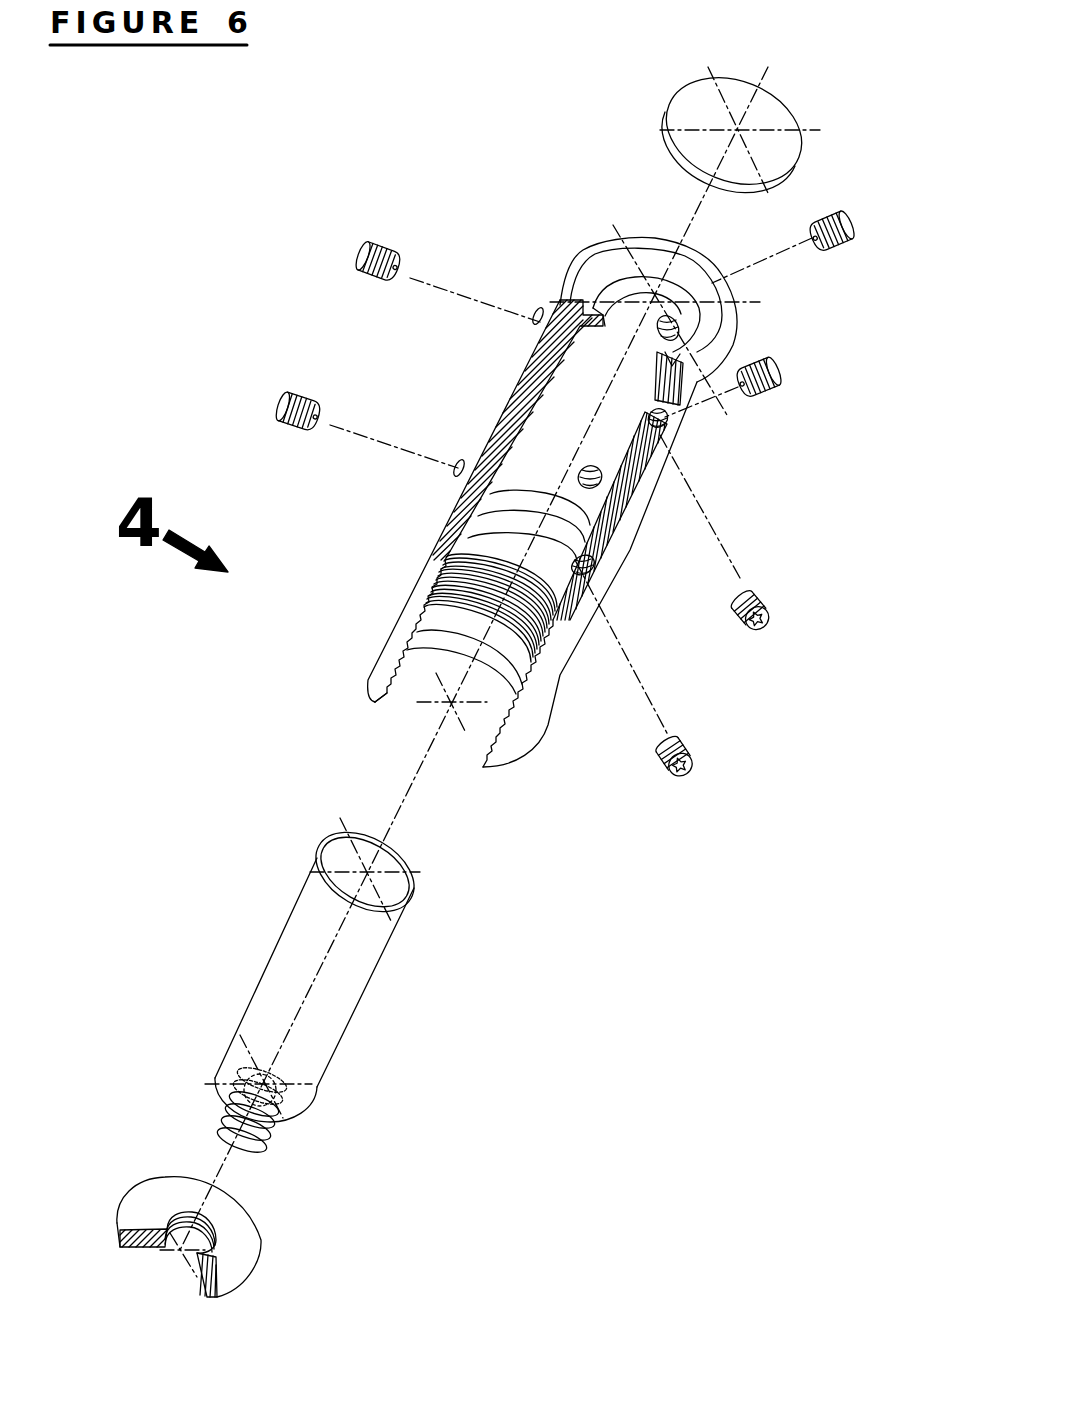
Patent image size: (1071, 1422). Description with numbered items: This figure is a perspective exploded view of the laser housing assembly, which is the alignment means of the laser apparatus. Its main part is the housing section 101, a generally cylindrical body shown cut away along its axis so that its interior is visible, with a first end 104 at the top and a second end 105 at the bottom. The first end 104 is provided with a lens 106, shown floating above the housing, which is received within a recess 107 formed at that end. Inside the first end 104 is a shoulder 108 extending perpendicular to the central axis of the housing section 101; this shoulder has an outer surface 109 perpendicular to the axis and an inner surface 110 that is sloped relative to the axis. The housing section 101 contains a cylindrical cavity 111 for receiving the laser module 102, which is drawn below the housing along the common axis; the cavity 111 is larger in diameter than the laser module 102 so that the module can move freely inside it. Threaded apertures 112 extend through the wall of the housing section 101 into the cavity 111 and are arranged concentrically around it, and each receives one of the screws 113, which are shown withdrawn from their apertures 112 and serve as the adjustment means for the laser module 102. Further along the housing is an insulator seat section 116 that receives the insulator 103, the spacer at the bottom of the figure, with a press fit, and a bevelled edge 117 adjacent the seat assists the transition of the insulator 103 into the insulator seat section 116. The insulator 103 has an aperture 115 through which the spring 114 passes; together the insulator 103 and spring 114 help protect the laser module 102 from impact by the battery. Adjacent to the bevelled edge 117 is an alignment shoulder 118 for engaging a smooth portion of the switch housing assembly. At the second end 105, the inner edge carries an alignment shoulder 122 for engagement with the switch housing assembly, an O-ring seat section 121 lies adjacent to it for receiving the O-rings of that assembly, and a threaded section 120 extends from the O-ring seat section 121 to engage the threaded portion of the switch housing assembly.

The housing section 101 is at (367, 642).
The laser module 102 is at (253, 970).
The insulator 103 is at (113, 1207).
The first end 104 is at (573, 237).
The second end 105 is at (517, 768).
The lens 106 is at (803, 115).
The recess 107 is at (707, 283).
The shoulder 108 is at (617, 315).
The outer surface 109 is at (593, 308).
The inner surface 110 is at (600, 485).
The cylindrical cavity 111 is at (514, 464).
The threaded apertures 112 is at (532, 310).
The screws 113 is at (353, 242).
The spring 114 is at (267, 1140).
The aperture 115 is at (163, 1207).
The insulator seat section 116 is at (450, 552).
The bevelled edge 117 is at (443, 565).
The alignment shoulder 118 is at (553, 633).
The threaded section 120 is at (405, 675).
The O-ring seat section 121 is at (388, 698).
The alignment shoulder 122 is at (378, 712).